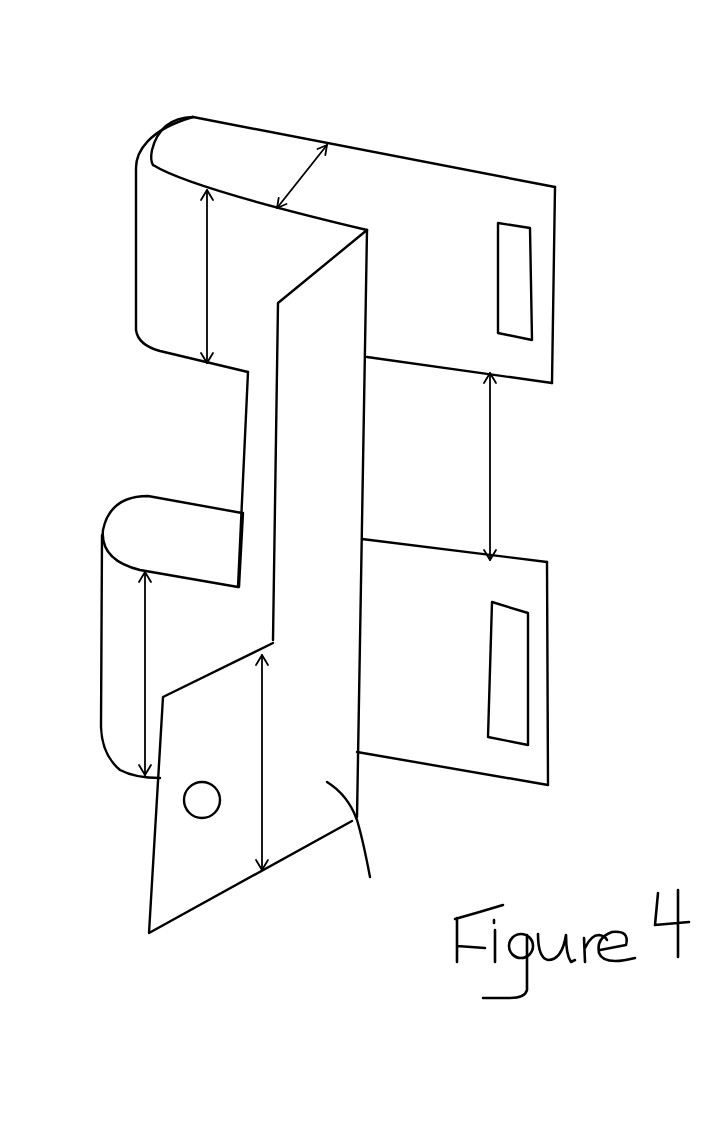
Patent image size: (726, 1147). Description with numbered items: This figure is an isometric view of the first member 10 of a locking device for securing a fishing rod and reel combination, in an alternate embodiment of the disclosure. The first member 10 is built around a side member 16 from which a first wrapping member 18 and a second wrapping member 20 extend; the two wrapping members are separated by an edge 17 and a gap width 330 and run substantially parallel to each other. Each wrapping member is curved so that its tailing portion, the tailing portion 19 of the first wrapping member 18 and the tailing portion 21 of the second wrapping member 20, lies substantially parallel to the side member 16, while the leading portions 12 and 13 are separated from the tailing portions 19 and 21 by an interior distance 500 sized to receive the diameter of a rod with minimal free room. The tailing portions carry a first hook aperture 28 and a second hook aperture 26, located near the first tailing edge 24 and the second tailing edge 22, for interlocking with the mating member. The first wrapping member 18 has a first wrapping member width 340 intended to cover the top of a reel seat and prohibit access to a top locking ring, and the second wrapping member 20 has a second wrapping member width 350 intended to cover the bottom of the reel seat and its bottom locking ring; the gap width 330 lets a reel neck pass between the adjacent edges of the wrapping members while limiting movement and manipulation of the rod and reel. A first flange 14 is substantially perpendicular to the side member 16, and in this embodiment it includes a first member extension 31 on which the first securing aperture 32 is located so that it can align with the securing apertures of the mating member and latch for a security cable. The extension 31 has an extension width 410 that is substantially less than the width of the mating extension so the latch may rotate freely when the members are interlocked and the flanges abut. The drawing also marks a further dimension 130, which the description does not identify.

The first member 10 is at (101, 84).
The leading portion 12 is at (143, 272).
The leading portion 13 is at (135, 601).
The first flange portion 14 is at (366, 860).
The side member 16 is at (257, 468).
The edge 17 is at (238, 533).
The first wrapping member 18 is at (191, 338).
The tailing portion 19 is at (398, 178).
The second wrapping member 20 is at (128, 650).
The tailing portion 21 is at (407, 573).
The second tailing edge 22 is at (547, 727).
The first tailing edge 24 is at (555, 335).
The second hook aperture 26 is at (510, 685).
The first hook aperture 28 is at (522, 290).
The first member extension 31 is at (168, 860).
The first securing aperture 32 is at (207, 805).
The web height dimension 130 is at (273, 378).
The gap width 330 is at (493, 463).
The first wrapping member width 340 is at (207, 262).
The second wrapping member width 350 is at (145, 647).
The second member extension width 410 is at (262, 763).
The interior distance 500 is at (302, 178).